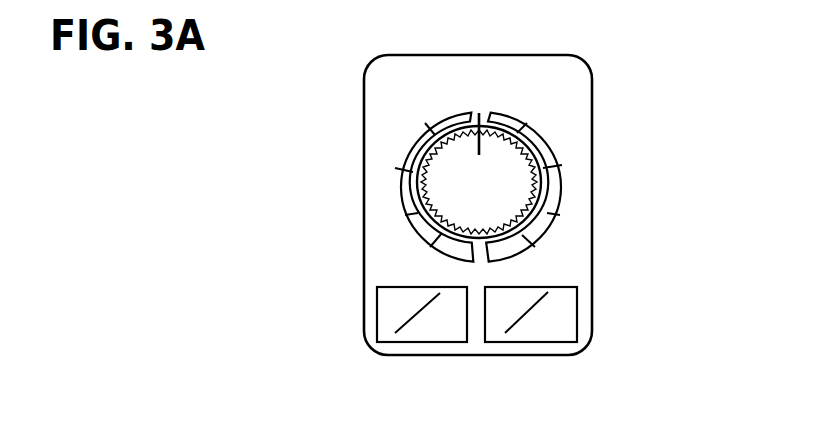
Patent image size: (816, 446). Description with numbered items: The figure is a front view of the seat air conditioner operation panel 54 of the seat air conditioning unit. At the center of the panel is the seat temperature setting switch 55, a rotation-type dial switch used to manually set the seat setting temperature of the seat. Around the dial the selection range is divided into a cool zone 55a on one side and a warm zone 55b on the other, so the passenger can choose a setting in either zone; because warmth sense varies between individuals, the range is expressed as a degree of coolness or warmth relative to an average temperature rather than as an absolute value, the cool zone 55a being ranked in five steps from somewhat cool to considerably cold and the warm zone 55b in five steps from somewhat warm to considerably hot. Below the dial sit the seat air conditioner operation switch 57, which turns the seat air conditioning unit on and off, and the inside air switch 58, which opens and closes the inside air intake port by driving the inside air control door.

The seat air conditioner operation panel 54 is at (555, 54).
The seat temperature setting switch 55 is at (505, 199).
The cool zone 55a is at (411, 189).
The warm zone 55b is at (550, 185).
The seat air conditioner operation switch 57 is at (432, 342).
The inside air switch 58 is at (513, 342).